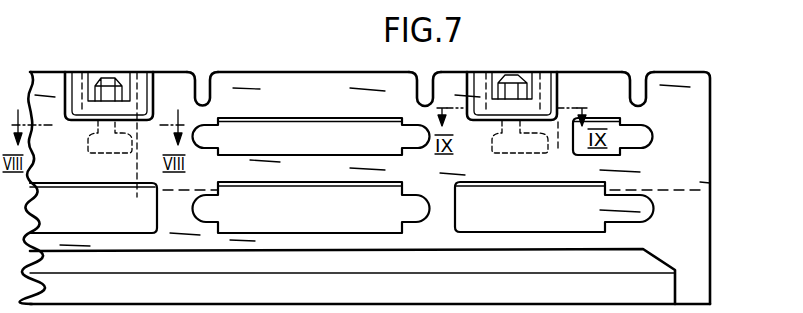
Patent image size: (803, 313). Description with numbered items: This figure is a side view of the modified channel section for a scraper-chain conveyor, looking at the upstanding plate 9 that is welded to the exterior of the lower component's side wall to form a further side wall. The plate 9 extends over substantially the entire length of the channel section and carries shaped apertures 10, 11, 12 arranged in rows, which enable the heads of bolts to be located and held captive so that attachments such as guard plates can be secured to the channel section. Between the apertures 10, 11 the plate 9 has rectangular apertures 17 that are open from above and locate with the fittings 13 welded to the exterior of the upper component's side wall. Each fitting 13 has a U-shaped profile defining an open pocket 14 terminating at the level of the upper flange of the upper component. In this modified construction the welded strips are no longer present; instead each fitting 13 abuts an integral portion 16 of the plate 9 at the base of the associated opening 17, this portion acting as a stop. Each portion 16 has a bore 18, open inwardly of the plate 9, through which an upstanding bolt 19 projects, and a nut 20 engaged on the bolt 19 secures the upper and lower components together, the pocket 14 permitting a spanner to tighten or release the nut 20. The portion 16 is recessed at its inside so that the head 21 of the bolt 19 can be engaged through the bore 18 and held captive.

The plate 9 is at (307, 83).
The shaped aperture 10 is at (203, 82).
The shaped aperture 11 is at (317, 146).
The shaped aperture 12 is at (322, 222).
The fitting 13 is at (147, 77).
The open pocket 14 is at (90, 77).
The integral portion of the plate 16 is at (72, 122).
The rectangular aperture 17 is at (157, 92).
The bore 18 is at (150, 200).
The bolt 19 is at (518, 73).
The nut 20 is at (115, 80).
The bolt head 21 is at (107, 143).